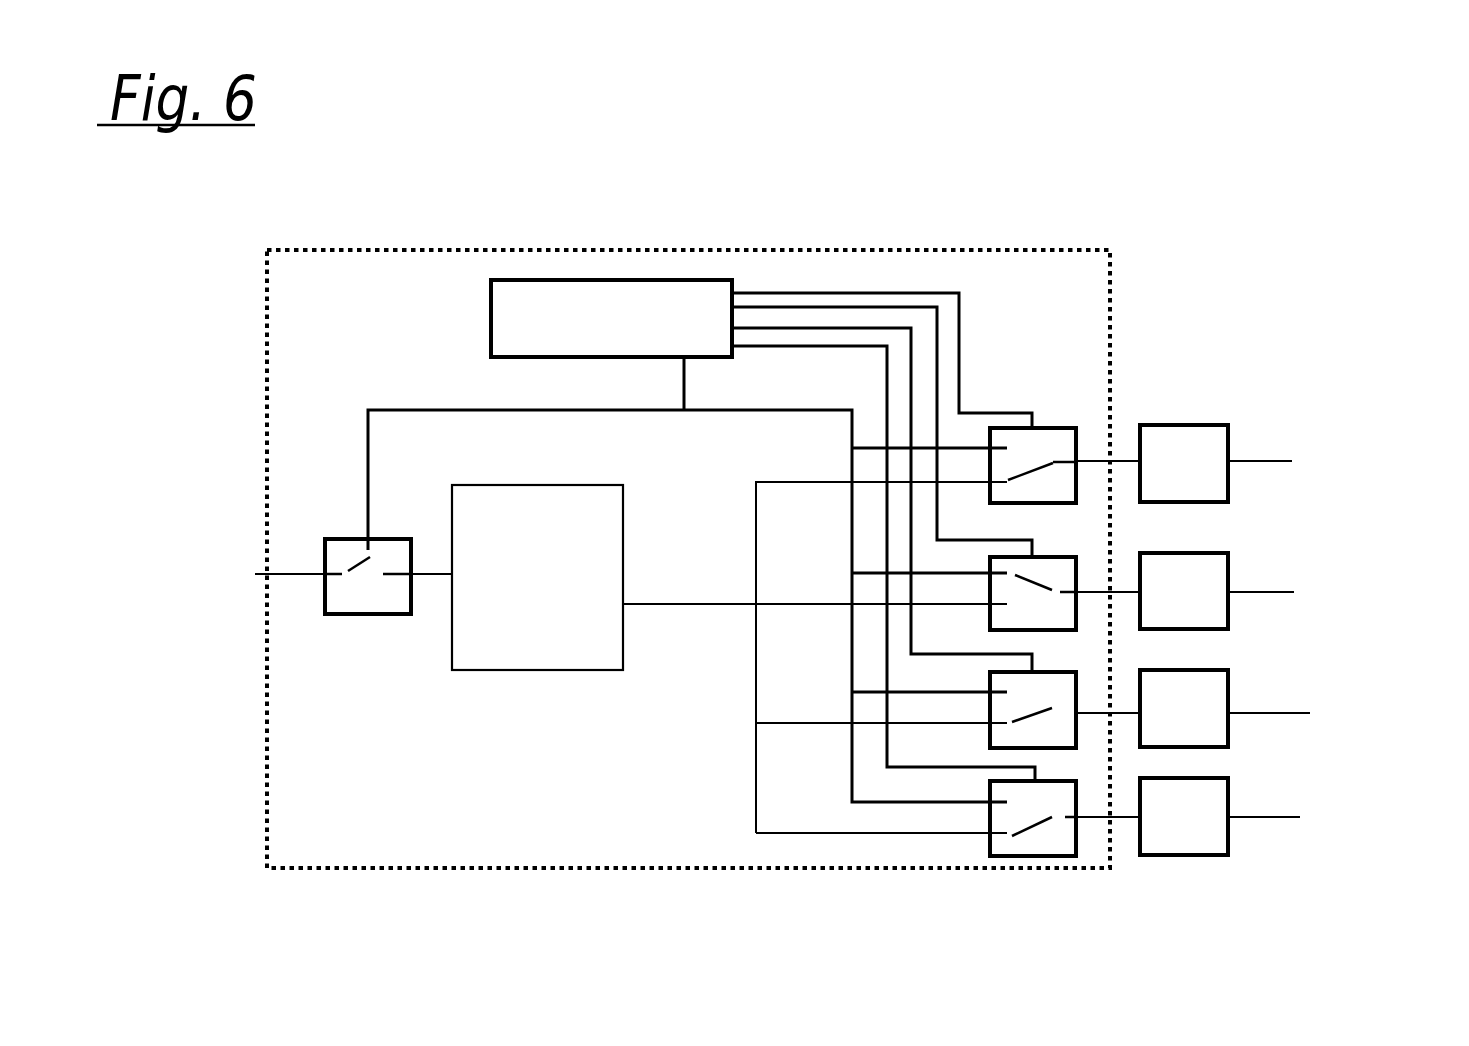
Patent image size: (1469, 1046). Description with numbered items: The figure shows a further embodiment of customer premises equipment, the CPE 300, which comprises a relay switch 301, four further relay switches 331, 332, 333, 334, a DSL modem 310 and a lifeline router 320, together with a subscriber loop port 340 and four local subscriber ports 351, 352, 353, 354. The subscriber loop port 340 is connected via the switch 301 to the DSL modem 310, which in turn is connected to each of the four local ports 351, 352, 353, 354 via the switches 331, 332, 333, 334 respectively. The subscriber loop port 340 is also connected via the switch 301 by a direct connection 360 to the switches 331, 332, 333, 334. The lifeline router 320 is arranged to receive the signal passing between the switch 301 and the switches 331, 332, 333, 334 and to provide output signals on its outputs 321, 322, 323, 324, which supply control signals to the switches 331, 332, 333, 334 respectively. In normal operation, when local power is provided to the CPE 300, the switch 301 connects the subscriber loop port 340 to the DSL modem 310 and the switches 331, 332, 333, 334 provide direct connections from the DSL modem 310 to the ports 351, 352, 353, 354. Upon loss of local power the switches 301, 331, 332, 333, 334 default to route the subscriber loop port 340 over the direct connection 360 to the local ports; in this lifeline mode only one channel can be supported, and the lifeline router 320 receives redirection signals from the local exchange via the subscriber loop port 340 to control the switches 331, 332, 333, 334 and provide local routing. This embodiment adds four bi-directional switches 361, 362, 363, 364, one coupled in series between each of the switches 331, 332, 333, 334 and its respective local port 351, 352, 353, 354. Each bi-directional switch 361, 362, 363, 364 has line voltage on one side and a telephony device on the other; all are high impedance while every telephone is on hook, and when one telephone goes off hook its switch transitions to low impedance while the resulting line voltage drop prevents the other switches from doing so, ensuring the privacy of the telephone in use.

The CPE 300 is at (688, 546).
The switch 301 is at (372, 561).
The DSL modem 310 is at (709, 646).
The lifeline router 320 is at (611, 306).
The output 321 is at (882, 360).
The output 322 is at (882, 432).
The output 323 is at (882, 500).
The output 324 is at (883, 563).
The switch 331 is at (1039, 454).
The switch 332 is at (1039, 580).
The switch 333 is at (1039, 698).
The switch 334 is at (1037, 806).
The subscriber loop port 340 is at (211, 592).
The local subscriber port 351 is at (1340, 467).
The local subscriber port 352 is at (1340, 591).
The local subscriber port 353 is at (1338, 712).
The local subscriber port 354 is at (1340, 819).
The direct connection 360 is at (687, 579).
The bi-directional switch 361 is at (1152, 451).
The bi-directional switch 362 is at (1152, 577).
The bi-directional switch 363 is at (1152, 696).
The bi-directional switch 364 is at (1152, 804).